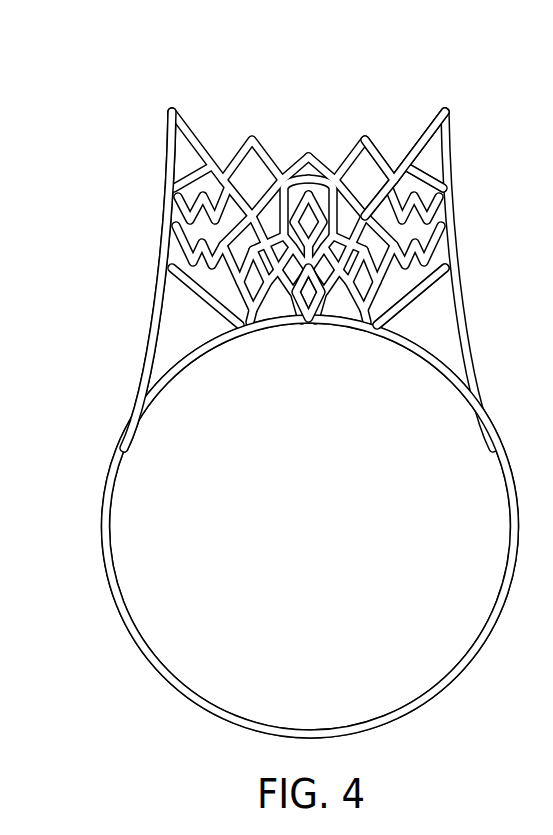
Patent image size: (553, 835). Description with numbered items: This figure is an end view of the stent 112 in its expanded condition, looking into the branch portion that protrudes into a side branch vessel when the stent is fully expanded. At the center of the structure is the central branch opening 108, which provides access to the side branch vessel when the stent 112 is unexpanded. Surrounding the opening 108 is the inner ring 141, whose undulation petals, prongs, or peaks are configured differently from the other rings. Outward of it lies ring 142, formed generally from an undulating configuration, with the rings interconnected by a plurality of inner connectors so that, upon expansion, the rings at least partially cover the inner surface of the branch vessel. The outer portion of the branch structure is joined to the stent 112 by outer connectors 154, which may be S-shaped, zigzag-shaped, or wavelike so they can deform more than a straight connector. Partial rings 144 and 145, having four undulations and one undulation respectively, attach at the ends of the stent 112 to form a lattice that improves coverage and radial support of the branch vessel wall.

The central branch opening 108 is at (318, 113).
The stent 112 is at (136, 178).
The inner ring 141 is at (420, 150).
The ring 142 is at (395, 188).
The partial ring 144 is at (379, 316).
The partial ring 145 is at (317, 306).
The outer connector 154 is at (148, 335).